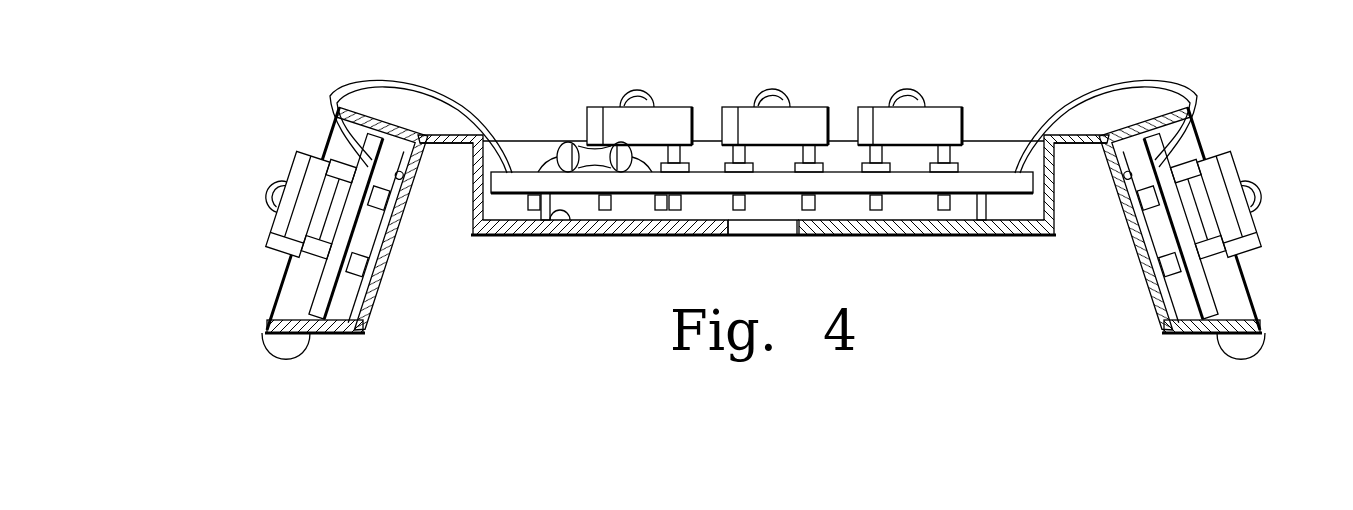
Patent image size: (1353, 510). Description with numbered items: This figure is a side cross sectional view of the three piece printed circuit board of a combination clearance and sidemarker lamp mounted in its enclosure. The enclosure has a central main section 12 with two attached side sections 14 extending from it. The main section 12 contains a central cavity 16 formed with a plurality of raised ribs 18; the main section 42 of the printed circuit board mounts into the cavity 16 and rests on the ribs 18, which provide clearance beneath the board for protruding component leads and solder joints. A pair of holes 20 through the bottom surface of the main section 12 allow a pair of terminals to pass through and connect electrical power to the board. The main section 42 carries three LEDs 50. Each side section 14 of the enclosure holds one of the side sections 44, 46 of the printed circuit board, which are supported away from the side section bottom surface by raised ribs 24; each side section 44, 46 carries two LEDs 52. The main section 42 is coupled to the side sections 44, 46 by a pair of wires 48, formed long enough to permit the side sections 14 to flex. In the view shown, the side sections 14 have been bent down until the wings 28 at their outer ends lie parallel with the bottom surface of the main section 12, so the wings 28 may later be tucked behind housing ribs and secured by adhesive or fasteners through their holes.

The main section 12 is at (1007, 228).
The side section 14 is at (380, 290).
The central cavity 16 is at (455, 145).
The raised ribs 18 is at (566, 236).
The holes 20 is at (795, 228).
The raised ribs 24 is at (402, 182).
The wings 28 is at (262, 333).
The main section 42 is at (993, 180).
The side section 44 is at (1235, 290).
The side section 46 is at (305, 300).
The wires 48 is at (463, 108).
The LEDs 50 is at (634, 93).
The LEDs 52 is at (264, 198).